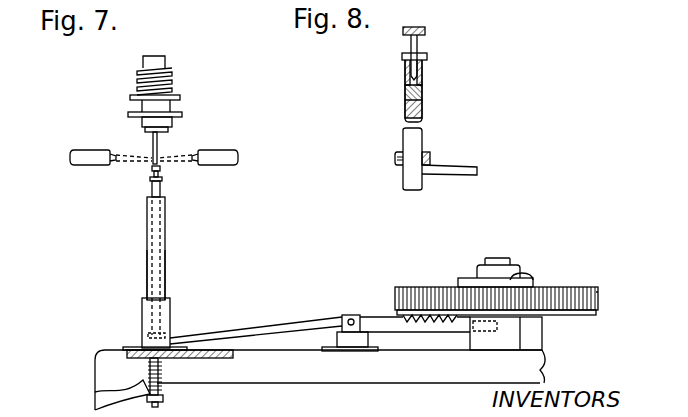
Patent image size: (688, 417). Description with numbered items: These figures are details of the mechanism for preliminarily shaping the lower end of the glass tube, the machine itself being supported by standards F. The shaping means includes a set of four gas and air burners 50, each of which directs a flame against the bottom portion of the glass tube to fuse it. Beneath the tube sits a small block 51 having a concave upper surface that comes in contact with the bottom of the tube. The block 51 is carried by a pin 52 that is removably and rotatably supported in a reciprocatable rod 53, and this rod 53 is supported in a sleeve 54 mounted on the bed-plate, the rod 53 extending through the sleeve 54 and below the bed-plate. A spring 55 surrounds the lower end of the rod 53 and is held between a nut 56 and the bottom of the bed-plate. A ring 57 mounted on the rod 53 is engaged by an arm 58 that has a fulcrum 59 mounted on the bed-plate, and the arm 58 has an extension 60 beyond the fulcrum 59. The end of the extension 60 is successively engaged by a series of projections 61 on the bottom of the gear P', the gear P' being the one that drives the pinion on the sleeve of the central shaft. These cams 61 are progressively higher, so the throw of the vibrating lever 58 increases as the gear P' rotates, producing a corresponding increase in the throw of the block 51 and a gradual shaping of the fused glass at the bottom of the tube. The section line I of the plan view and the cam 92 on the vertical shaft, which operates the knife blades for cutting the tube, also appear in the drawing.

In FIG. 7, the gas and air burners 50 is at (80, 150).
In FIG. 7, the block 51 is at (160, 169).
In FIG. 8, the block 51 is at (425, 30).
In FIG. 7, the pin 52 is at (150, 179).
In FIG. 8, the pin 52 is at (411, 46).
In FIG. 7, the reciprocatable rod 53 is at (165, 194).
In FIG. 8, the reciprocatable rod 53 is at (425, 102).
In FIG. 7, the sleeve 54 is at (165, 275).
In FIG. 7, the spring 55 is at (160, 370).
In FIG. 7, the nut 56 is at (163, 399).
In FIG. 7, the ring 57 is at (170, 331).
In FIG. 8, the ring 57 is at (430, 158).
In FIG. 7, the arm 58 is at (262, 327).
In FIG. 8, the arm 58 is at (475, 173).
In FIG. 7, the fulcrum 59 is at (351, 315).
In FIG. 7, the extension 60 is at (407, 333).
In FIG. 7, the projections 61 is at (425, 323).
In FIG. 7, the cam 92 is at (460, 285).
In FIG. 7, the line I— I is at (527, 277).
In FIG. 7, the gear P' is at (613, 282).
In FIG. 7, the standards F is at (407, 380).